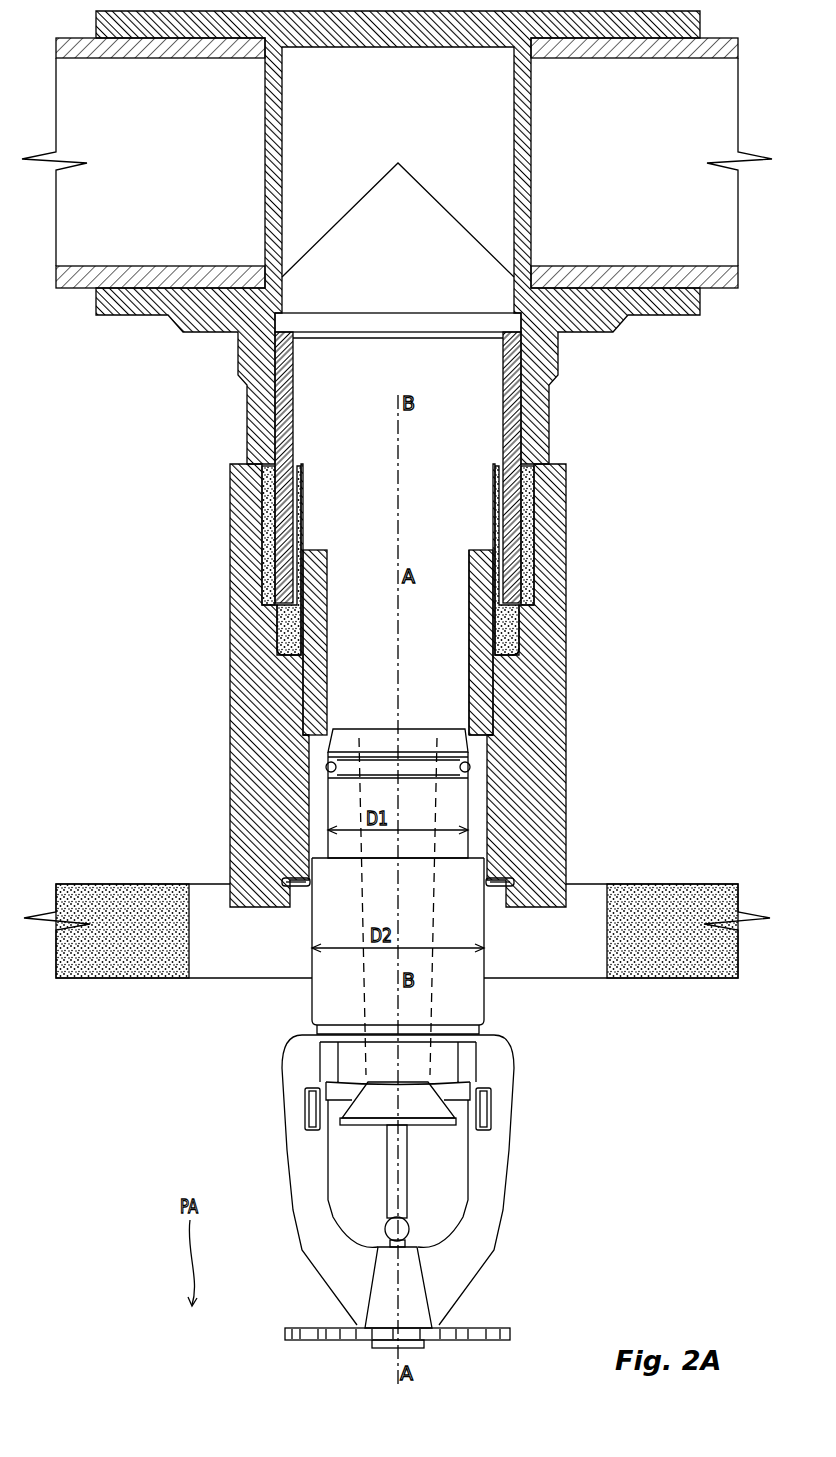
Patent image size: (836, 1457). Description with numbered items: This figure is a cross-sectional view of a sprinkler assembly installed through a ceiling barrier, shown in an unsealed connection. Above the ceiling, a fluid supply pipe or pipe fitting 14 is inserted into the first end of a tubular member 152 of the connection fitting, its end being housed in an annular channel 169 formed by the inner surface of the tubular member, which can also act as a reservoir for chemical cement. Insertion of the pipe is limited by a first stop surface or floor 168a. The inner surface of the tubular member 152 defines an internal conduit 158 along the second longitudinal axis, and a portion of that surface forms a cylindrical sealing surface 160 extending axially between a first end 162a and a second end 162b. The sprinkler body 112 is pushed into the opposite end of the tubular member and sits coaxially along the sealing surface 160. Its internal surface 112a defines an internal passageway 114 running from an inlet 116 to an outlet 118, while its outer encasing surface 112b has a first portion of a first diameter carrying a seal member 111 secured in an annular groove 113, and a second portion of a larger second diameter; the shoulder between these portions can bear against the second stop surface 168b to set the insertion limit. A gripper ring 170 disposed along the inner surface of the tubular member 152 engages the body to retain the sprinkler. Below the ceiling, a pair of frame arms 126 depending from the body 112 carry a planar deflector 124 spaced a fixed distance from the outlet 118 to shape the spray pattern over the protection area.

The fluid supply pipe or pipe fitting 14 is at (247, 420).
The seal member 111 is at (467, 764).
The sprinkler body 112 is at (463, 842).
The internal surface 112a is at (470, 751).
The outer encasing surface 112b is at (485, 992).
The annular groove 113 is at (413, 769).
The internal passageway 114 is at (390, 894).
The inlet 116 is at (375, 741).
The outlet 118 is at (414, 1110).
The deflector 124 is at (462, 1328).
The frame arms 126 is at (293, 1188).
The tubular member 152 is at (255, 788).
The internal conduit 158 is at (525, 612).
The cylindrical sealing surface 160 is at (473, 690).
The first end of sealing surface 162a is at (458, 632).
The second end of sealing surface 162b is at (470, 728).
The first stop surface or floor 168a is at (283, 659).
The second stop surface 168b is at (303, 722).
The annular channel 169 is at (262, 578).
The gripper ring 170 is at (298, 880).